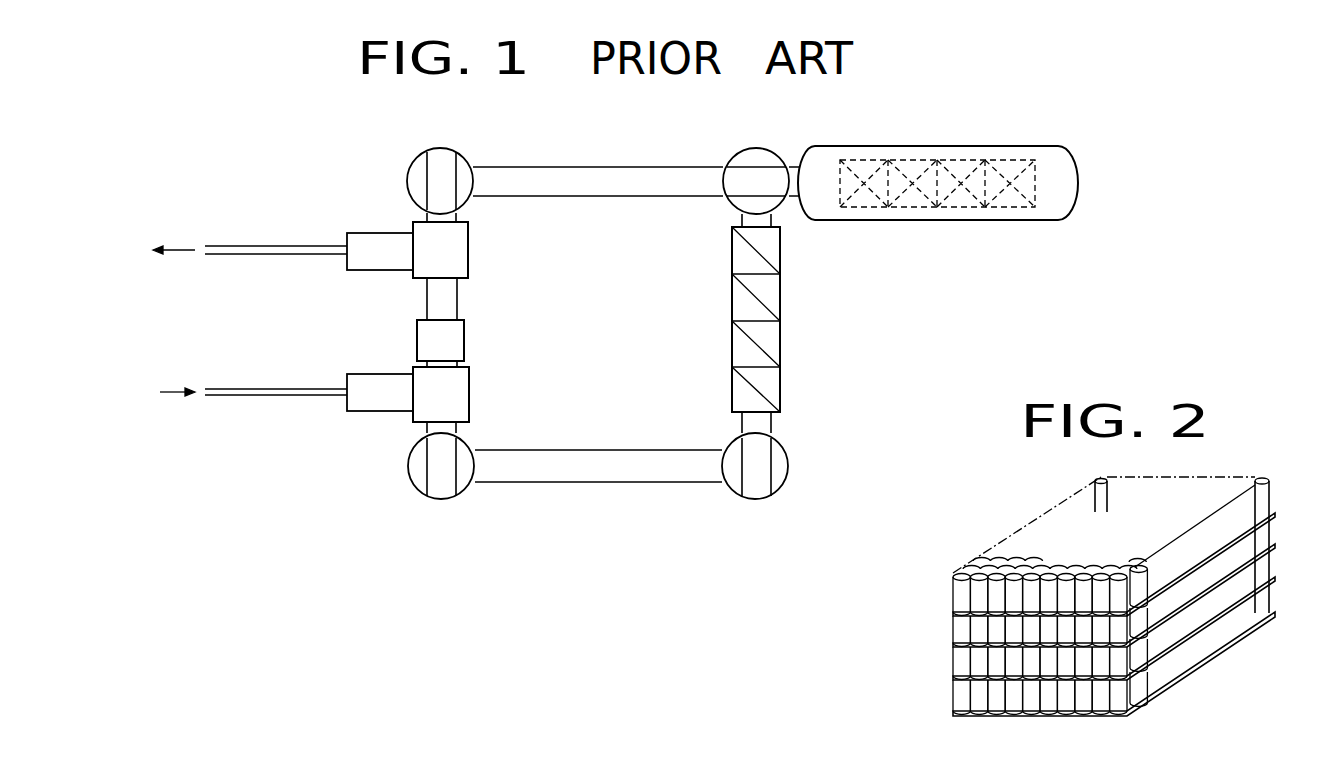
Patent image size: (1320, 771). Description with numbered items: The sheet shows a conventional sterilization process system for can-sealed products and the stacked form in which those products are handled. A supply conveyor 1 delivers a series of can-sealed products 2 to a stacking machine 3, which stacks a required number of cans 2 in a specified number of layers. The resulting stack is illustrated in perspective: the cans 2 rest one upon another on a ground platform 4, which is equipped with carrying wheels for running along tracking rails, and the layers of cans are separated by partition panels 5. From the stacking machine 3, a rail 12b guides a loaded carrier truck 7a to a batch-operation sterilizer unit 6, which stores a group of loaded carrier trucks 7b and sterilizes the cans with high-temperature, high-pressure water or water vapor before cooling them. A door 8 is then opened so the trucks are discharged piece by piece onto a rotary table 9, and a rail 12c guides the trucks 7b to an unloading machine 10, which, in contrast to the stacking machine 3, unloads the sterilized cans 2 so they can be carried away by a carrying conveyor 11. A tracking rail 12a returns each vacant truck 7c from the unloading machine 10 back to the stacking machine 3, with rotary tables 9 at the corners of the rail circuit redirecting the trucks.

In FIG. 1, the supply conveyor 1 is at (283, 397).
In FIG. 1, the stacking machine 3 is at (423, 397).
In FIG. 1, the sterilizer unit 6 is at (962, 212).
In FIG. 1, the carrier truck 7a is at (773, 380).
In FIG. 1, the loaded carrier truck 7b is at (868, 160).
In FIG. 1, the vacant truck 7c is at (457, 340).
In FIG. 1, the door 8 is at (810, 190).
In FIG. 1, the rotary table 9 is at (463, 167).
In FIG. 1, the unloading machine 10 is at (420, 238).
In FIG. 1, the carrying conveyor 11 is at (290, 245).
In FIG. 1, the tracking rail 12a is at (452, 306).
In FIG. 1, the rail 12b is at (599, 472).
In FIG. 1, the rail 12c is at (605, 185).
In FIG. 2, the can-sealed products 2 is at (963, 696).
In FIG. 2, the ground platform 4 is at (1203, 668).
In FIG. 2, the partition panels 5 is at (1278, 578).